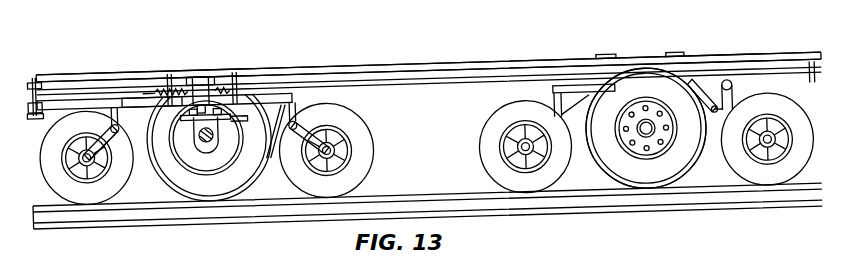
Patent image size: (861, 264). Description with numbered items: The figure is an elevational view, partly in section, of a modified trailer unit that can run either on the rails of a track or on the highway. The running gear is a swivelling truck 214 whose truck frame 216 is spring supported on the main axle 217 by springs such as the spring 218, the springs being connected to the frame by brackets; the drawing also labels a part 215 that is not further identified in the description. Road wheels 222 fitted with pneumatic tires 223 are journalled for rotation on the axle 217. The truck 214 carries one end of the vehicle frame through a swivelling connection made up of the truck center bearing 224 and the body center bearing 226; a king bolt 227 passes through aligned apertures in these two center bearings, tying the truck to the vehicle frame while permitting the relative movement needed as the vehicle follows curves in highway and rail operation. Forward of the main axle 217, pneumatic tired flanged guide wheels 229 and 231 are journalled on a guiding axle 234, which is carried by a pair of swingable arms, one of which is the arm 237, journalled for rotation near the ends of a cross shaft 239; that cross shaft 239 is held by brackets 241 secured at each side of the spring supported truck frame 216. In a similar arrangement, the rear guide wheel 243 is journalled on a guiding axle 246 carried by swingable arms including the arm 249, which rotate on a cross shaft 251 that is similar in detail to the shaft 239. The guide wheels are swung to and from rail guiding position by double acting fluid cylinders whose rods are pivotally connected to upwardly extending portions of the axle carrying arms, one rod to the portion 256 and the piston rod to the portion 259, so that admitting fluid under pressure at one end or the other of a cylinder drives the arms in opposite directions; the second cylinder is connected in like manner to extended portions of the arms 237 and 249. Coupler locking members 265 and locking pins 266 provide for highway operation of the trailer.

The swivelling truck 214 is at (273, 97).
The journal box 215 is at (190, 113).
The truck frame 216 is at (130, 110).
The axle 217 is at (211, 150).
The spring 218 is at (236, 128).
The road wheel 222 is at (172, 174).
The pneumatic tire 223 is at (643, 80).
The truck center bearing 224 is at (260, 90).
The body center bearing 226 is at (146, 89).
The king bolt 227 is at (208, 80).
The flanged guide wheel 229 is at (773, 176).
The flanged guide wheel 231 is at (358, 133).
The guiding axle 234 is at (333, 150).
The swingable arm 237 is at (310, 130).
The cross shaft 239 is at (300, 120).
The bracket 241 is at (284, 112).
The rear guide wheel 243 is at (523, 110).
The guiding axle 246 is at (505, 152).
The swingable arm 249 is at (102, 148).
The cross shaft 251 is at (116, 129).
The upwardly extending portion 256 is at (727, 103).
The upwardly extending portion 259 is at (560, 88).
The coupler locking member 265 is at (30, 82).
The locking pin 266 is at (38, 125).